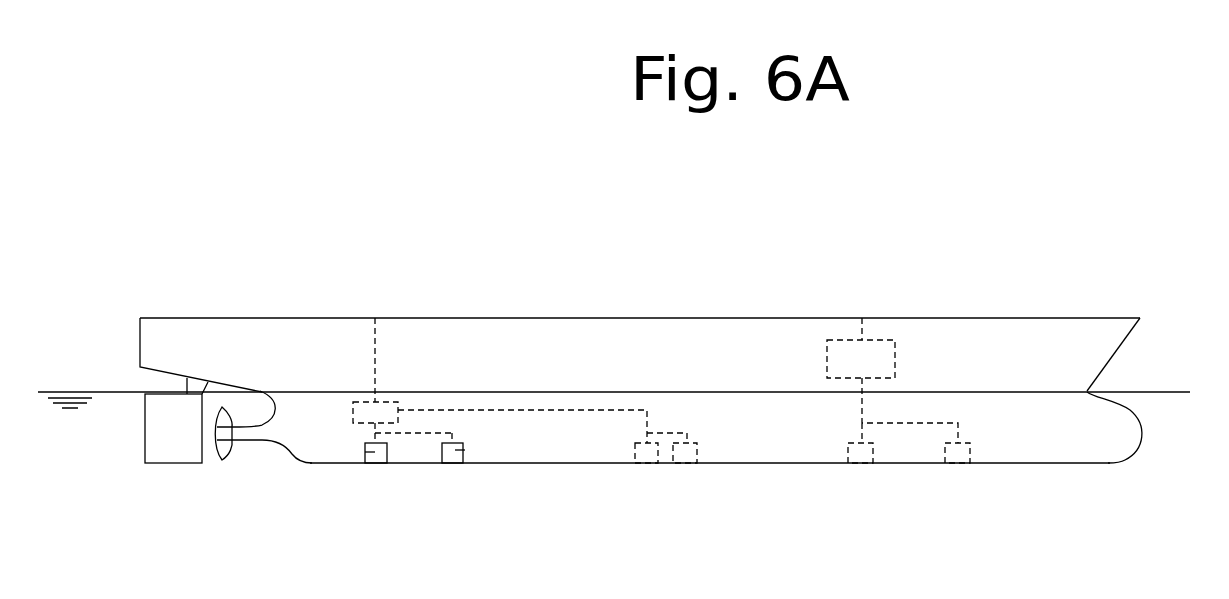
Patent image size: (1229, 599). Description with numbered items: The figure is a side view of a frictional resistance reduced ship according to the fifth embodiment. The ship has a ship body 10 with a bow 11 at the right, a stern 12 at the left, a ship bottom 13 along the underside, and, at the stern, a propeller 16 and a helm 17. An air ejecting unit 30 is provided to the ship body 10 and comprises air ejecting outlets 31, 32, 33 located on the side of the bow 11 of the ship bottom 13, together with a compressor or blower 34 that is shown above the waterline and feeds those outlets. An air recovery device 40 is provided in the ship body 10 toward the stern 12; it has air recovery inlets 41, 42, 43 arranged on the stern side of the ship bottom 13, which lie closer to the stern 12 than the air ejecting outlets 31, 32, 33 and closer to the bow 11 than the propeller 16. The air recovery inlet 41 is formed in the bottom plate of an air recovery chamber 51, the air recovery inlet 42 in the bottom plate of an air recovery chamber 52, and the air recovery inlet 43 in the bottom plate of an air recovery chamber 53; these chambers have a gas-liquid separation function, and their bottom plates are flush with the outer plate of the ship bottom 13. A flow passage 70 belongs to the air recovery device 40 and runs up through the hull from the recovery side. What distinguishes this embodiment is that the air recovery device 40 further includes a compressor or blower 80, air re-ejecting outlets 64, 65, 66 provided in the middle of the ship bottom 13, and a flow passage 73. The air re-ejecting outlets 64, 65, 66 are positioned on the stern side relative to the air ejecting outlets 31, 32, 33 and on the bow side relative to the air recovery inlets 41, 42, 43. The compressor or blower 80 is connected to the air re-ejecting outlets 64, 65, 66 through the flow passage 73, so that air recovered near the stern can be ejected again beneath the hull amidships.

The ship body 10 is at (723, 318).
The bow 11 is at (1118, 343).
The stern 12 is at (140, 335).
The ship bottom 13 is at (785, 465).
The propeller 16 is at (222, 463).
The helm 17 is at (168, 463).
The air ejecting unit 30 is at (913, 302).
The air ejecting outlet 31 is at (958, 467).
The air ejecting outlet 32 is at (831, 499).
The air ejecting outlet 33 is at (858, 467).
The compressor or blower 34 is at (895, 360).
The air recovery device 40 is at (447, 302).
The air recovery inlet 41 is at (373, 467).
The air recovery inlet 42 is at (483, 498).
The air recovery inlet 43 is at (455, 467).
The air recovery chamber 51 is at (365, 452).
The air recovery chamber 52 is at (518, 434).
The air recovery chamber 53 is at (465, 450).
The air re-ejecting outlet 64 is at (687, 467).
The air re-ejecting outlet 65 is at (624, 498).
The air re-ejecting outlet 66 is at (648, 467).
The flow passage 70 is at (378, 355).
The flow passage 73 is at (530, 410).
The compressor or blower 80 is at (360, 402).